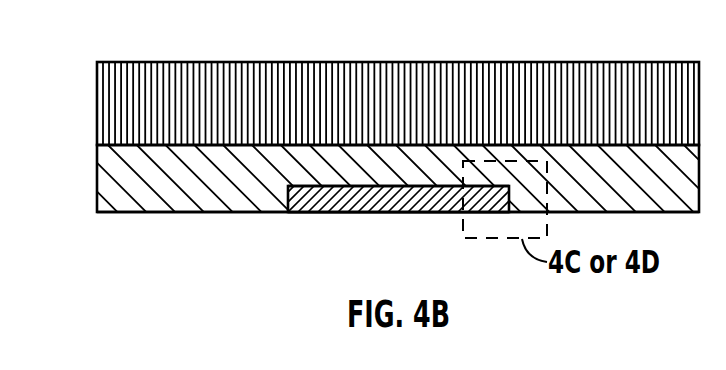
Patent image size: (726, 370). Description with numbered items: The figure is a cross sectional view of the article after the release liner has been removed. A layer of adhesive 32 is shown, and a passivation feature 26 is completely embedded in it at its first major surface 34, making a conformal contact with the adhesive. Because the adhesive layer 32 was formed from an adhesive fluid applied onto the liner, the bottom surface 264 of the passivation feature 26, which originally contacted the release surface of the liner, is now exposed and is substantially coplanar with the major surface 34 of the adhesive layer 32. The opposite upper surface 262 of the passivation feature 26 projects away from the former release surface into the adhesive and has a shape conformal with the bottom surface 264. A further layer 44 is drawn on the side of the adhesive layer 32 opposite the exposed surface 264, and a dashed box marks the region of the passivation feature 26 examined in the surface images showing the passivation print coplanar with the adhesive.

The passivation feature 26 is at (395, 199).
The upper surface 262 is at (385, 185).
The bottom surface 264 is at (320, 213).
The layer of adhesive 32 is at (124, 166).
The first major surface 34 is at (160, 213).
The cover layer 44 is at (124, 93).